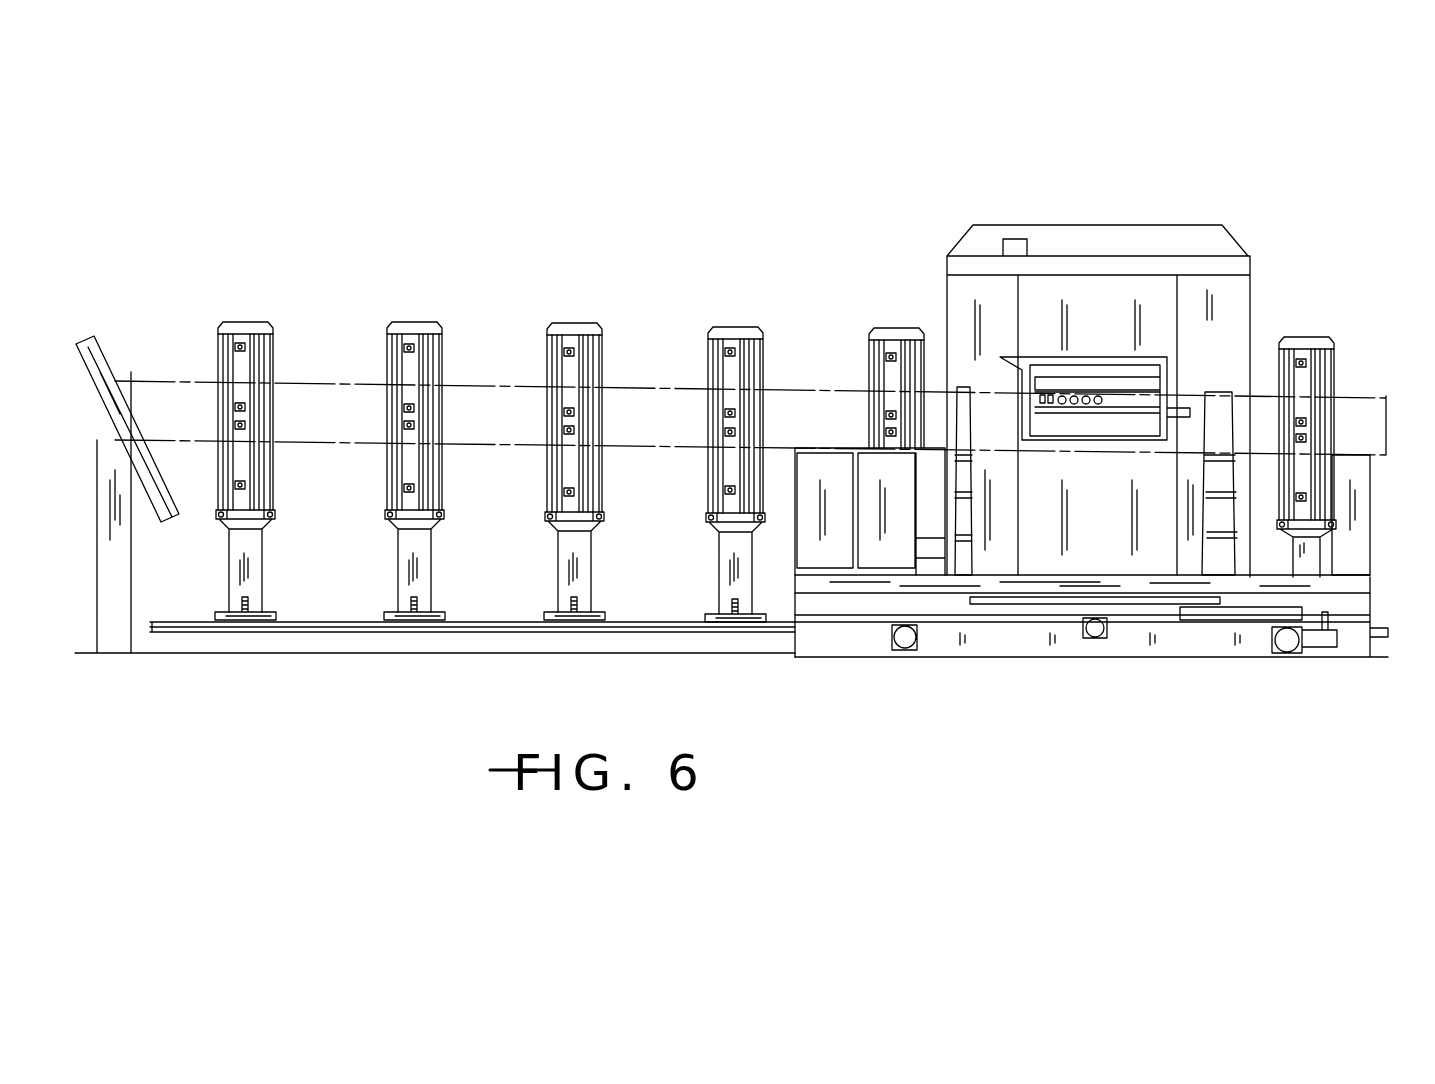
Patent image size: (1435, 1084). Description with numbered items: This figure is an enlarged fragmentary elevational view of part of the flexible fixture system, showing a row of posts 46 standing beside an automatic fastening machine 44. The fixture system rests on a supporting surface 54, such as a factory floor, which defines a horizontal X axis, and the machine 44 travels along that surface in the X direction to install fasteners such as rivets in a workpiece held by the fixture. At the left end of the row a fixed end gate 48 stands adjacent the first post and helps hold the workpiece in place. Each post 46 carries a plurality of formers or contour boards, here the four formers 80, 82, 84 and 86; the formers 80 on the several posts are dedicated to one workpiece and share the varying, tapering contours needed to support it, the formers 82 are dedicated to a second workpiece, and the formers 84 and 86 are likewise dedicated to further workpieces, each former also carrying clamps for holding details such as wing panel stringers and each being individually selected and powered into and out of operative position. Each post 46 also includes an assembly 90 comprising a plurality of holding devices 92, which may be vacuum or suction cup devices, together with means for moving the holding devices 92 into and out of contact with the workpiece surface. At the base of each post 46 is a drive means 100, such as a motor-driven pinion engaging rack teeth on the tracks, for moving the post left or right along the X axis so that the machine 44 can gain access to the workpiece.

The automatic fastening machine 44 is at (1195, 360).
The post 46 is at (386, 350).
The fixed end gate 48 is at (106, 352).
The supporting surface 54 is at (83, 652).
The former 80 is at (220, 398).
The former 82 is at (233, 458).
The former 84 is at (283, 398).
The former 86 is at (283, 418).
The assembly 90 is at (230, 358).
The holding device 92 is at (236, 347).
The drive means 100 is at (257, 612).